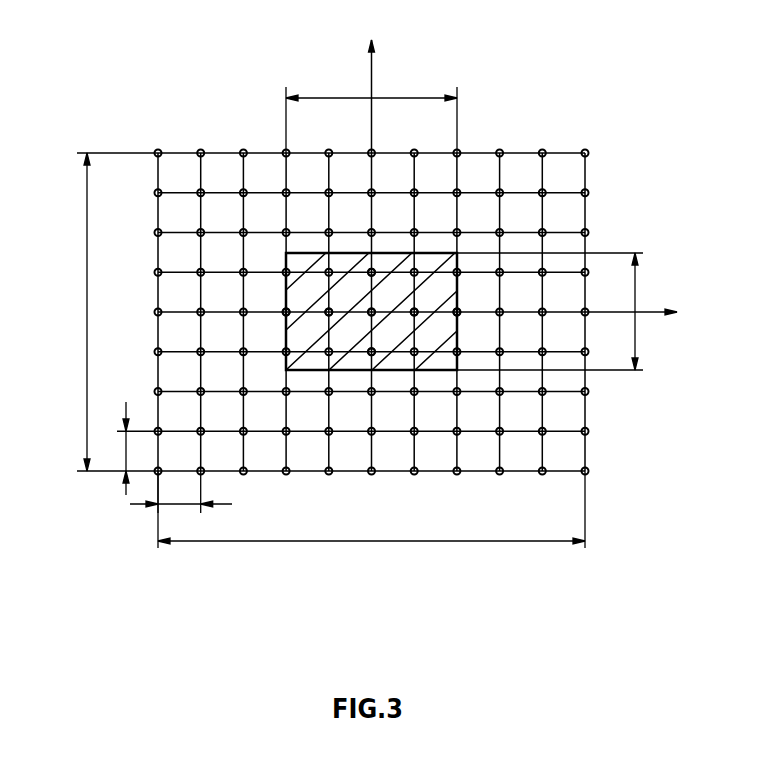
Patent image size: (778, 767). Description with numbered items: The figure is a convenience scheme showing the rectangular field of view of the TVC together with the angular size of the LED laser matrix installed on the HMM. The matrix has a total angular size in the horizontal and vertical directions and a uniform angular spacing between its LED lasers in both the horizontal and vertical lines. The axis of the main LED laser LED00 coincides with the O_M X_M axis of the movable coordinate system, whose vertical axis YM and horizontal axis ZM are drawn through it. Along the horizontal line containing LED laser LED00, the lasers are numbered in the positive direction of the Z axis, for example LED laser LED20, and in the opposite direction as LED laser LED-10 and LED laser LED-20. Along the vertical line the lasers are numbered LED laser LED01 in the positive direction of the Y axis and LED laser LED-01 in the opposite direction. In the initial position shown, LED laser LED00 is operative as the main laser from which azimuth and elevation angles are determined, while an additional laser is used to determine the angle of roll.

The LED laser 00 LED00 is at (372, 312).
The LED laser 01 LED01 is at (372, 272).
The LED laser −01 LED-01 is at (372, 352).
The LED laser −10 LED-10 is at (329, 312).
The LED laser −20 LED-20 is at (286, 312).
The LED laser 20 LED20 is at (457, 312).
The O_M Y_M axis YM is at (354, 96).
The O_M Z_M axis ZM is at (632, 295).